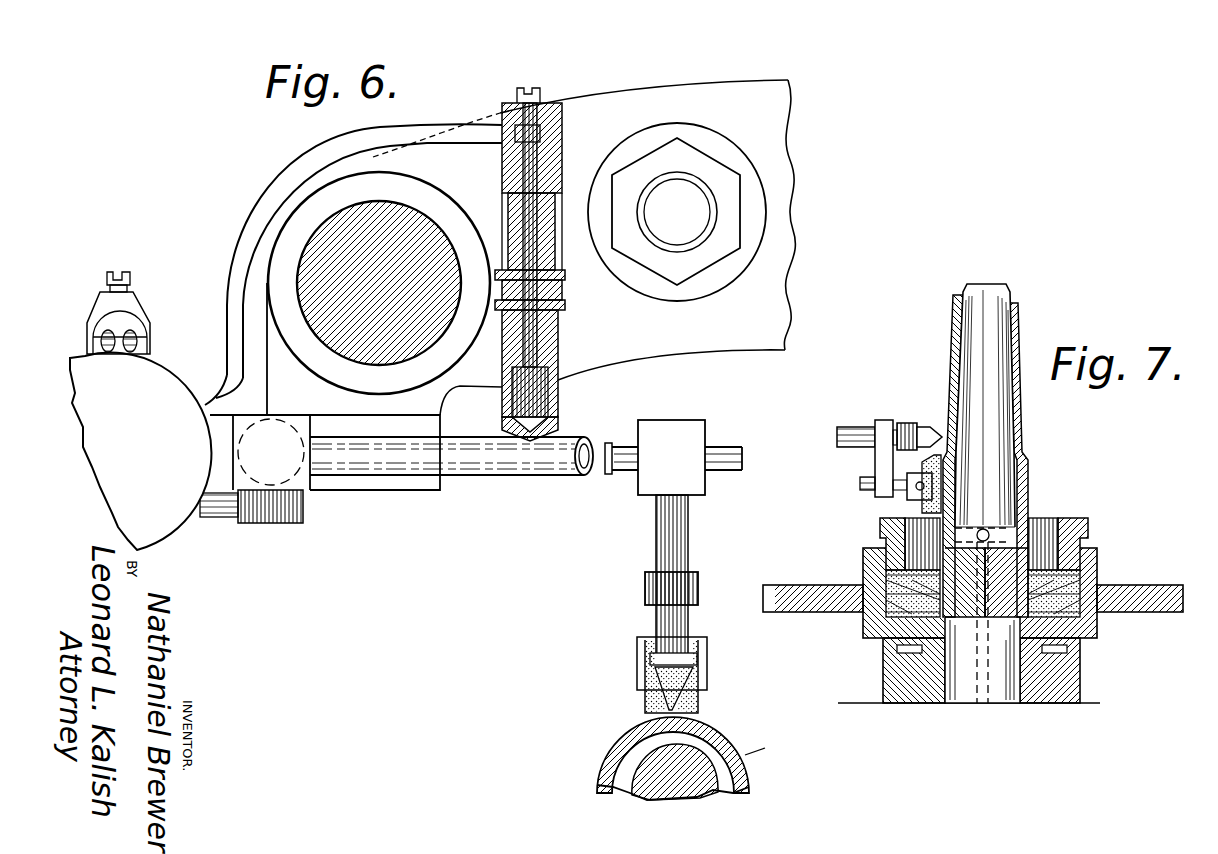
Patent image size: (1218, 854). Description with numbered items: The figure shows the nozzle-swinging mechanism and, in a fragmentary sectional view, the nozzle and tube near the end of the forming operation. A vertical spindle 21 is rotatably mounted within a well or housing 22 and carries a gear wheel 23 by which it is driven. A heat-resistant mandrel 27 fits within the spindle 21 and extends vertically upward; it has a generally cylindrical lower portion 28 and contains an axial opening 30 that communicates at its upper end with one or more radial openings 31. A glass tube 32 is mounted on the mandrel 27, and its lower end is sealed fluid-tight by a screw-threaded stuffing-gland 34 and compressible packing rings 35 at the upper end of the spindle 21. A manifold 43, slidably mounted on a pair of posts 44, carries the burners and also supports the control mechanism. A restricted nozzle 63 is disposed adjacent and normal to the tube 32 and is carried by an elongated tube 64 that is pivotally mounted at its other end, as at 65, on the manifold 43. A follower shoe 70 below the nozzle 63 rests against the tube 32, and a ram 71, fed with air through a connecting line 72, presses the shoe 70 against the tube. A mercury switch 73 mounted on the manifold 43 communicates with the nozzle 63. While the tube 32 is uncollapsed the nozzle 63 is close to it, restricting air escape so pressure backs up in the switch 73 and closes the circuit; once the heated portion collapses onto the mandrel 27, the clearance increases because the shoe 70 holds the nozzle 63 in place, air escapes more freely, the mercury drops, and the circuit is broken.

In FIG. 7, the vertical spindle 21 is at (1032, 673).
In FIG. 7, the well or housing 22 is at (1067, 702).
In FIG. 7, the gear wheel 23 is at (777, 587).
In FIG. 6, the mandrel 27 is at (637, 770).
In FIG. 7, the mandrel 27 is at (1005, 293).
In FIG. 7, the cylindrical lower portion 28 is at (997, 500).
In FIG. 7, the axial opening 30 is at (973, 660).
In FIG. 7, the radial openings 31 is at (988, 531).
In FIG. 7, the glass tube 32 is at (1024, 407).
In FIG. 7, the screw-threaded stuffing-gland 34 is at (1080, 517).
In FIG. 7, the compressible packing rings or gaskets 35 is at (900, 598).
In FIG. 6, the manifold 43 is at (700, 330).
In FIG. 6, the posts 44 is at (403, 222).
In FIG. 6, the restricted nozzle 63 is at (668, 706).
In FIG. 7, the restricted nozzle 63 is at (942, 433).
In FIG. 6, the elongated tube 64 is at (472, 463).
In FIG. 6, the pivotal mounting 65 is at (290, 493).
In FIG. 6, the follower shoe 70 is at (645, 710).
In FIG. 7, the follower shoe 70 is at (920, 503).
In FIG. 6, the ram 71 is at (558, 383).
In FIG. 6, the connecting line 72 is at (272, 205).
In FIG. 6, the mercury switch 73 is at (162, 383).